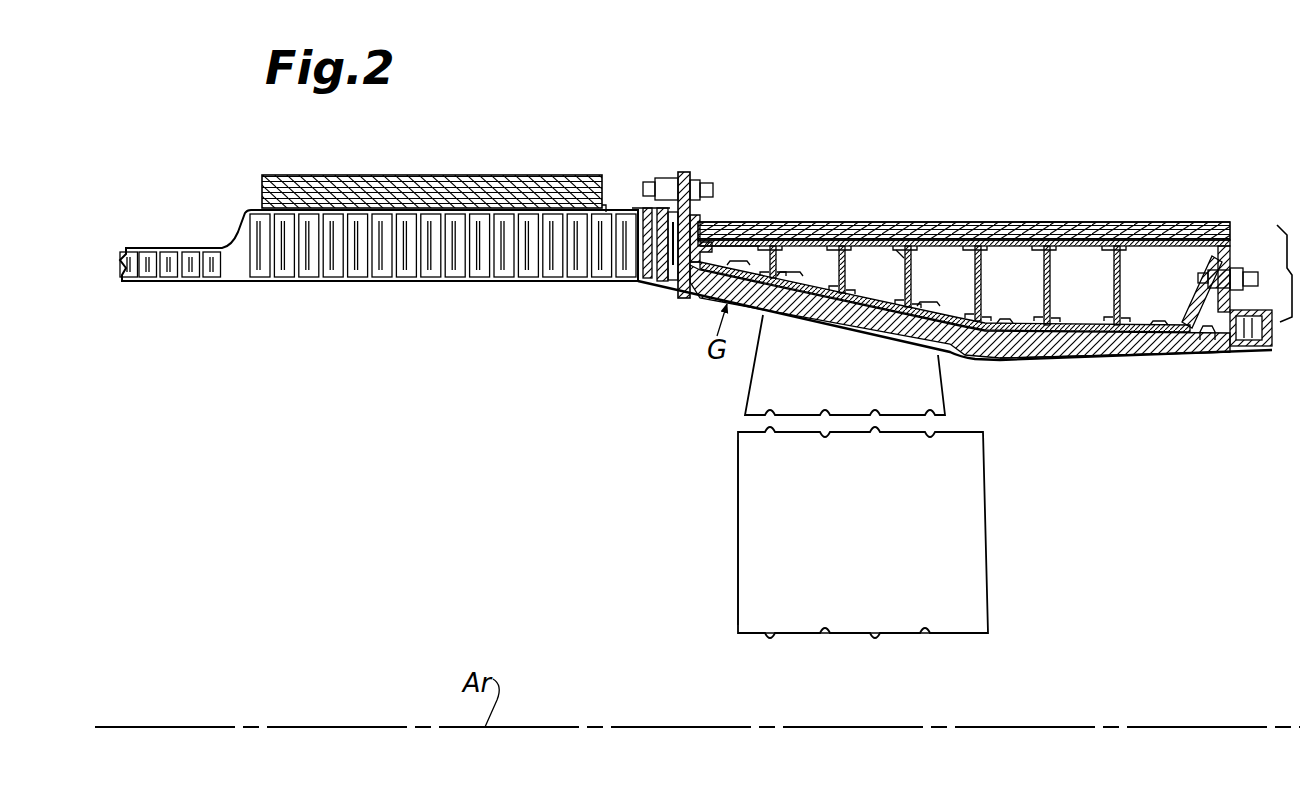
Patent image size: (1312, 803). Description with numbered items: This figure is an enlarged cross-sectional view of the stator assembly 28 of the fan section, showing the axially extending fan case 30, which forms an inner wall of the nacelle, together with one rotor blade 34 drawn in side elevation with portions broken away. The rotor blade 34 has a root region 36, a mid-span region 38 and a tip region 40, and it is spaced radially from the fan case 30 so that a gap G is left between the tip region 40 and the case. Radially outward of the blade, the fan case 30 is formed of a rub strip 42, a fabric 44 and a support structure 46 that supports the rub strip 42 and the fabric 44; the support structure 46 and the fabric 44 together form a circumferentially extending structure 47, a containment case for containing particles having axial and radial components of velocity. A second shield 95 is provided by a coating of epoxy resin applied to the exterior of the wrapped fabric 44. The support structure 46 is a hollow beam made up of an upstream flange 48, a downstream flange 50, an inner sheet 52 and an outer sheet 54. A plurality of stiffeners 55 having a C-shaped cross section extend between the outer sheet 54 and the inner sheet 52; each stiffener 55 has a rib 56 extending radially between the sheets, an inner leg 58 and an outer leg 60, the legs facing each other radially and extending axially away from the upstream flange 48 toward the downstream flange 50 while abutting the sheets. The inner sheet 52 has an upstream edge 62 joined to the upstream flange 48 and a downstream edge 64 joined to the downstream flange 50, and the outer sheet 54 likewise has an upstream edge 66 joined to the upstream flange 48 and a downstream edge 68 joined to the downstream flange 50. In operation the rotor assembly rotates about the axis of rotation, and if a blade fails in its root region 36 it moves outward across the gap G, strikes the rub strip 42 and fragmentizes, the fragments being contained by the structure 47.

The stator assembly 28 is at (926, 138).
The fan case 30 is at (520, 284).
The rotor blade 34 is at (738, 505).
The root region 36 is at (880, 628).
The mid-span region 38 is at (850, 530).
The tip region 40 is at (826, 389).
The rub strip 42 is at (1071, 350).
The fabric 44 is at (960, 222).
The support structure 46 is at (1128, 272).
The circumferentially extending structure 47 is at (657, 282).
The upstream flange 48 is at (690, 172).
The downstream flange 50 is at (1234, 255).
The inner sheet 52 is at (1026, 328).
The outer sheet 54 is at (1040, 222).
The stiffener 55 is at (858, 262).
The rib 56 is at (928, 268).
The inner leg 58 is at (923, 318).
The outer leg 60 is at (900, 246).
The upstream edge 62 is at (765, 290).
The downstream edge 64 is at (1148, 330).
The upstream edge 66 is at (717, 247).
The downstream edge 68 is at (1182, 226).
The second shield 95 is at (760, 222).